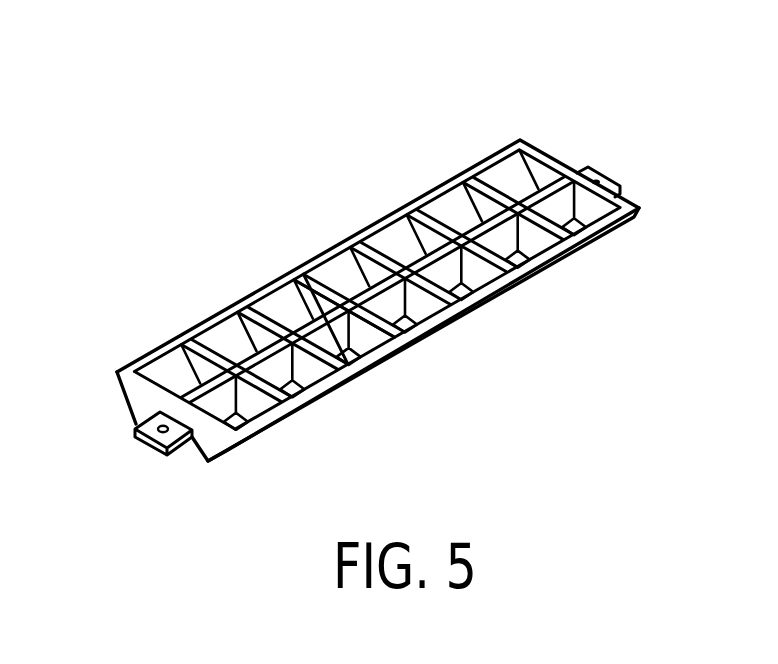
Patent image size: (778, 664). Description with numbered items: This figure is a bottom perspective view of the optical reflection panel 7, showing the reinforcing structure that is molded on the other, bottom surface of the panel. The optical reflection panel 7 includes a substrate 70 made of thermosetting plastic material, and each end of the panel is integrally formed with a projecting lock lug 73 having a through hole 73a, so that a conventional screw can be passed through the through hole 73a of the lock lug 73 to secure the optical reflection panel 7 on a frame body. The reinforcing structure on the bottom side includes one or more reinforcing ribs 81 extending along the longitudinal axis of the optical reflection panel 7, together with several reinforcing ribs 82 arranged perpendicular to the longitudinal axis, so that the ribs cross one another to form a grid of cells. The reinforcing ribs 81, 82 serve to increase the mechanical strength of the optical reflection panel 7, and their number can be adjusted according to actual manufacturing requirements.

The optical reflection panel 7 is at (510, 116).
The substrate 70 is at (199, 463).
The lock lug 73 is at (160, 447).
The through hole 73a is at (135, 424).
The reinforcing rib 81 is at (297, 332).
The reinforcing rib 82 is at (325, 293).